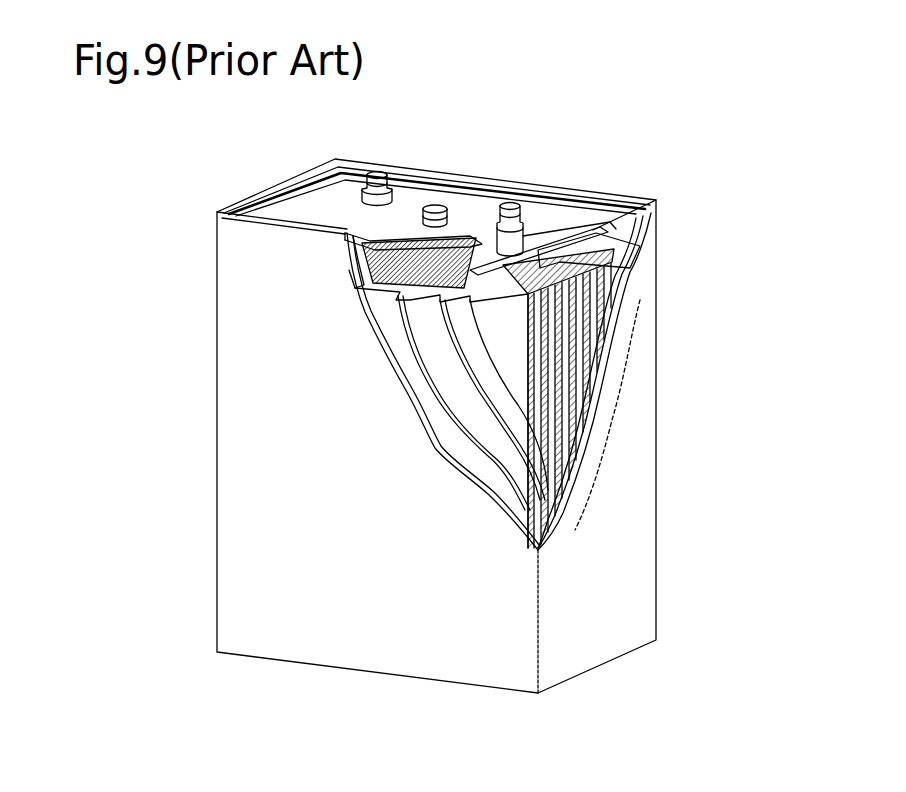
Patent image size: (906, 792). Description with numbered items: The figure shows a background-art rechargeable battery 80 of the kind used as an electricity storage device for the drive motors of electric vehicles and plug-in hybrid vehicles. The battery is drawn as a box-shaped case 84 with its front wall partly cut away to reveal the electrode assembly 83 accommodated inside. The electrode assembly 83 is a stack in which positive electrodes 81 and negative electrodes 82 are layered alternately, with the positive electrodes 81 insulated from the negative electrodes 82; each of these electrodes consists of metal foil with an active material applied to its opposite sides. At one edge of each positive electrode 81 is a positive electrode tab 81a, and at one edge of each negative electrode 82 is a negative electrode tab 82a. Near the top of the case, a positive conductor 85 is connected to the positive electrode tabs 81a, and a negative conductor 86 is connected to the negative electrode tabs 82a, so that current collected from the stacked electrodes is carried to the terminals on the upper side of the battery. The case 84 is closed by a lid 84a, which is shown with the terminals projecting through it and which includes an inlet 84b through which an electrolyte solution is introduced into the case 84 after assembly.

The rechargeable battery 80 is at (663, 186).
The positive electrode 81 is at (540, 420).
The positive electrode tab 81a is at (355, 288).
The negative electrode 82 is at (548, 366).
The negative electrode tab 82a is at (565, 208).
The electrode assembly 83 is at (568, 494).
The case 84 is at (634, 602).
The lid 84a is at (332, 196).
The inlet 84b is at (450, 192).
The positive conductor 85 is at (346, 238).
The negative conductor 86 is at (511, 209).